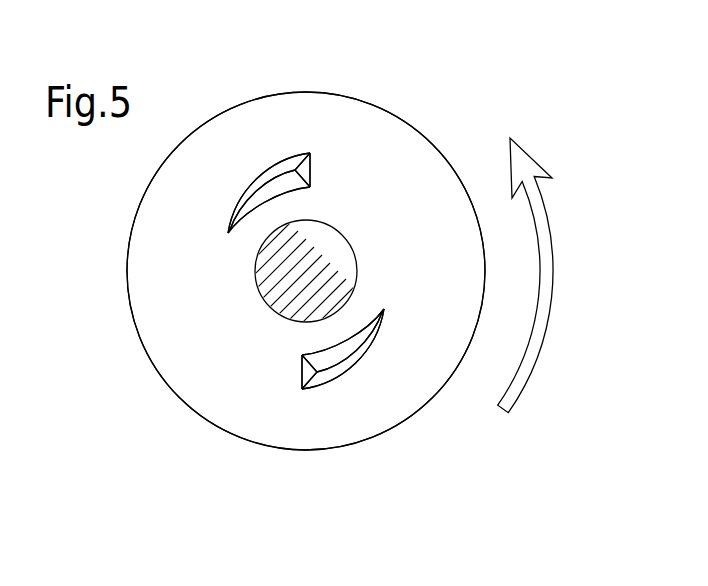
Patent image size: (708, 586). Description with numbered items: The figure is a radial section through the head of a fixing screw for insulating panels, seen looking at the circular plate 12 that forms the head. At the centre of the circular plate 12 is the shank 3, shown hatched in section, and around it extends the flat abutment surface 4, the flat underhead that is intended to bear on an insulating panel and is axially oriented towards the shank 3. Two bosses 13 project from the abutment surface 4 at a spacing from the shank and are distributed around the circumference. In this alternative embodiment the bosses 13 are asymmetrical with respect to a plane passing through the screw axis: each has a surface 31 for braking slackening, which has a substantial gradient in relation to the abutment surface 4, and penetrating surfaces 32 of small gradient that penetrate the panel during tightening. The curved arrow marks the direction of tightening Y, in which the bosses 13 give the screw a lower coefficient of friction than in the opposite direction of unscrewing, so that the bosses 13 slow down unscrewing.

The shank 3 is at (355, 250).
The flat abutment surface 4 is at (170, 306).
The circular plate 12 is at (422, 130).
The bosses 13 is at (285, 157).
The surface for braking slackening 31 is at (312, 170).
The penetrating surfaces 32 is at (268, 170).
The direction of tightening Y is at (552, 295).